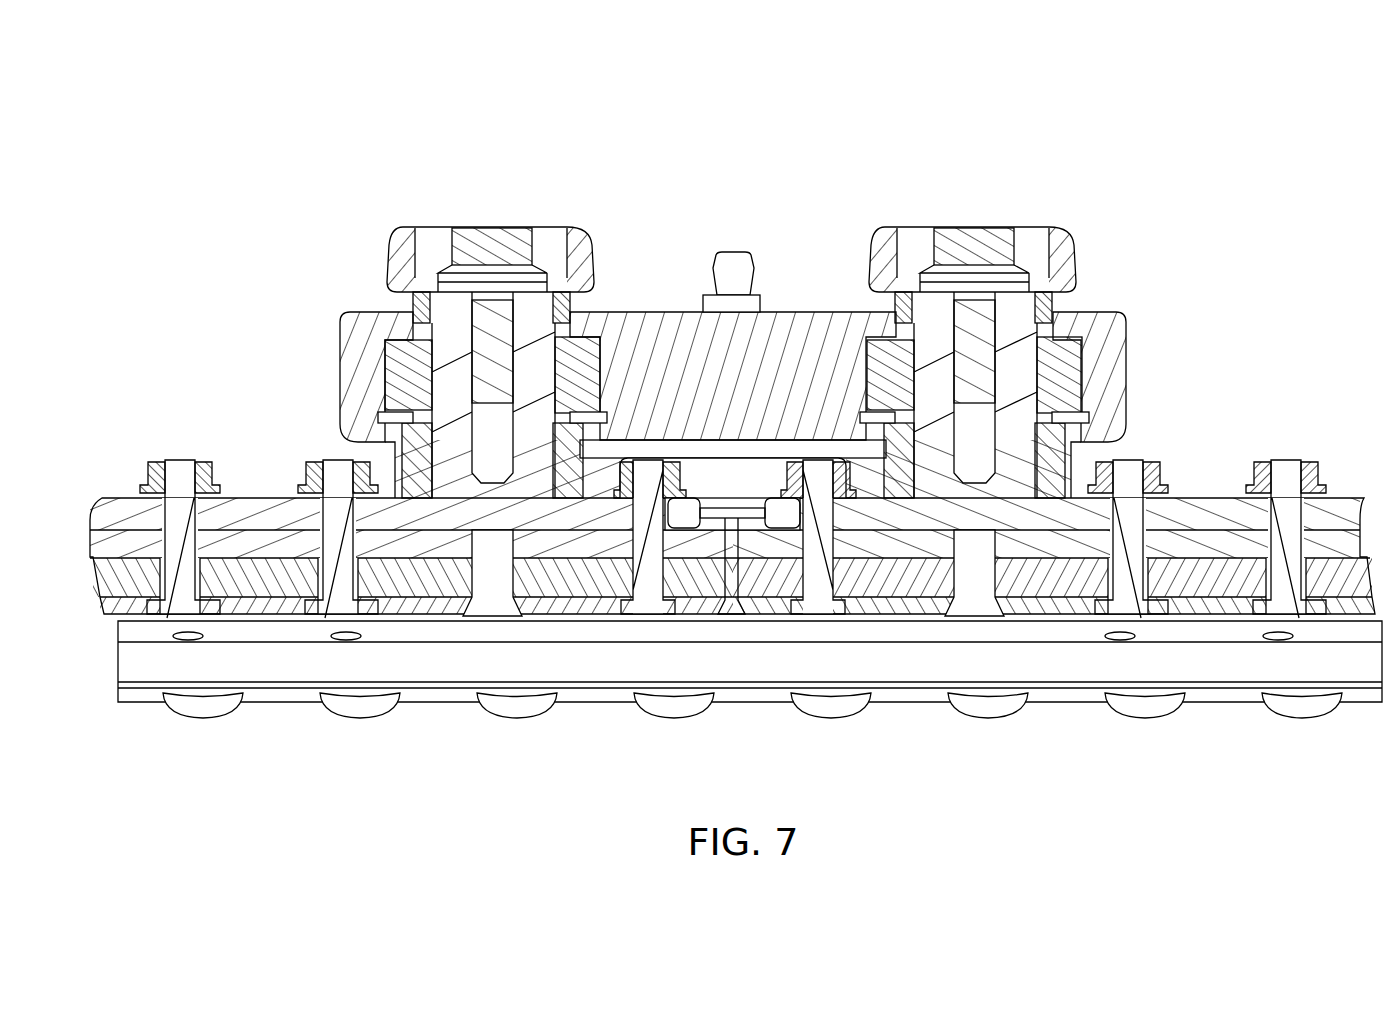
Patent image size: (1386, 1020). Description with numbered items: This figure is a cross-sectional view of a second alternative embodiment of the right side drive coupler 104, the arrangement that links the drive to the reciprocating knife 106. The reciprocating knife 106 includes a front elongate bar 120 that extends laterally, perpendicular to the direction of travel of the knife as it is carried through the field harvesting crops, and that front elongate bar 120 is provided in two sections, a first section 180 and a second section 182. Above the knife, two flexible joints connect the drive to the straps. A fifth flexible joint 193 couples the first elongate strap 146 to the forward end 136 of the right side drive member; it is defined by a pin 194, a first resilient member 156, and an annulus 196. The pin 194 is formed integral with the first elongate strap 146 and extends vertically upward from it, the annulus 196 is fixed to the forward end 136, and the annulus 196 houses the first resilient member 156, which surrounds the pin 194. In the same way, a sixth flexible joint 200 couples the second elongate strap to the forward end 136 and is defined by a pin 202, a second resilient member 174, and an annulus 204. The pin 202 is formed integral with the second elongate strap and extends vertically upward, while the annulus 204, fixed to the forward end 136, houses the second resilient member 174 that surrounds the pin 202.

The right side drive coupler 104 is at (706, 146).
The reciprocating knife 106 is at (1316, 409).
The front elongate bar 120 is at (280, 573).
The forward end of the right side drive member 136 is at (805, 305).
The first elongate strap 146 is at (255, 498).
The first resilient member 156 is at (400, 355).
The second resilient member 174 is at (1060, 355).
The first section 180 is at (705, 577).
The second section 182 is at (763, 577).
The fifth flexible joint 193 is at (333, 231).
The pin 194 is at (447, 330).
The annulus 196 is at (345, 311).
The sixth flexible joint 200 is at (1130, 225).
The pin 202 is at (1013, 320).
The annulus 204 is at (1108, 383).